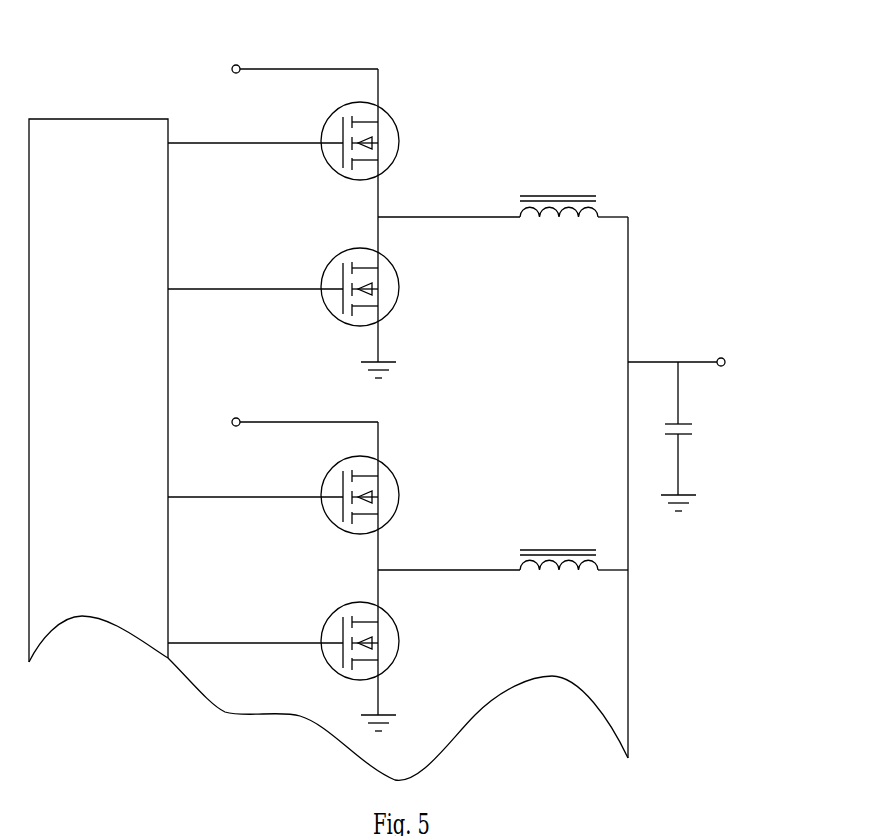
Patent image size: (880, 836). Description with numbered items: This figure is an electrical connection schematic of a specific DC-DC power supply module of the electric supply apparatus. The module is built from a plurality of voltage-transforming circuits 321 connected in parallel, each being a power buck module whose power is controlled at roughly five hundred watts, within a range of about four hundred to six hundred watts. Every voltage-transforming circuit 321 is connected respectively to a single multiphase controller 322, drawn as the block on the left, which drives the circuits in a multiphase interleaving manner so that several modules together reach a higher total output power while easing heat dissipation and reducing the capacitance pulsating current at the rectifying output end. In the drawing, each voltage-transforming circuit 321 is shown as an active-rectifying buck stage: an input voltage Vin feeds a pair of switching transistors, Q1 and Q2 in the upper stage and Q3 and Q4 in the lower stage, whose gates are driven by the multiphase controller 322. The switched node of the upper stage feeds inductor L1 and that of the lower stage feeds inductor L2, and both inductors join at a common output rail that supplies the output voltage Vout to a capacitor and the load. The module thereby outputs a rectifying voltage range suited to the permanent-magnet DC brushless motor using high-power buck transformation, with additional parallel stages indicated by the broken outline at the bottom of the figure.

The voltage-transforming circuit 321 is at (480, 382).
The multiphase controller 322 is at (114, 60).
The high-side switch transistor Q1 is at (283, 137).
The low-side switch transistor Q2 is at (283, 285).
The high-side switch transistor Q3 is at (283, 490).
The low-side switch transistor Q4 is at (283, 638).
The inductor L1 is at (503, 192).
The inductor L2 is at (503, 544).
The input voltage terminal Vin is at (290, 251).
The output voltage terminal Vout is at (710, 372).